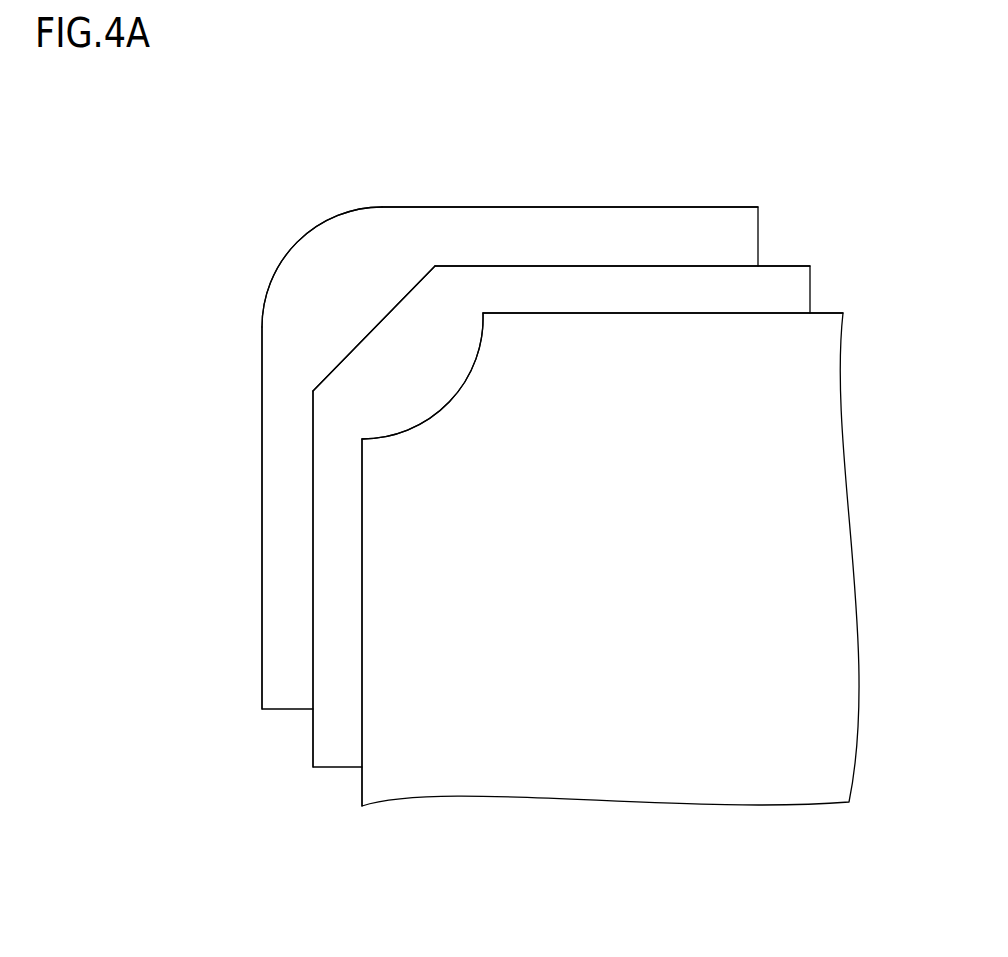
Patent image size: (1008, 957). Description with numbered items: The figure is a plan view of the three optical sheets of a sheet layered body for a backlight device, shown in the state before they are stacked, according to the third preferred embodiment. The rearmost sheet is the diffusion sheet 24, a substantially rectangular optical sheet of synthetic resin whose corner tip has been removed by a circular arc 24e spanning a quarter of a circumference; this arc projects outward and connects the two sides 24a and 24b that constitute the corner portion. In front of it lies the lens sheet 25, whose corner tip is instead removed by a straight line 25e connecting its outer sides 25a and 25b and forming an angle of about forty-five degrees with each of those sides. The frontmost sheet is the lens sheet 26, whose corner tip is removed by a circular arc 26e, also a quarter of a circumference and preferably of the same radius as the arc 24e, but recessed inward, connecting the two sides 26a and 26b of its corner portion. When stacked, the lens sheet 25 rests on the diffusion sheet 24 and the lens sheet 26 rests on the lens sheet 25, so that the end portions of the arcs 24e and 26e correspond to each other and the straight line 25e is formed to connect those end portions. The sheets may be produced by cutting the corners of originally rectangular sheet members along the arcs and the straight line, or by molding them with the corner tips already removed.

The diffusion sheet 24 is at (656, 222).
The side of the diffusion sheet 24a is at (455, 207).
The side of the diffusion sheet 24b is at (262, 438).
The circular arc 24e is at (300, 242).
The lens sheet 25 is at (712, 275).
The outer side of the lens sheet 25a is at (490, 266).
The outer side of the lens sheet 25b is at (313, 500).
The straight line 25e is at (377, 327).
The lens sheet 26 is at (765, 330).
The side of the lens sheet 26a is at (558, 313).
The side of the lens sheet 26b is at (362, 585).
The circular arc 26e is at (419, 423).